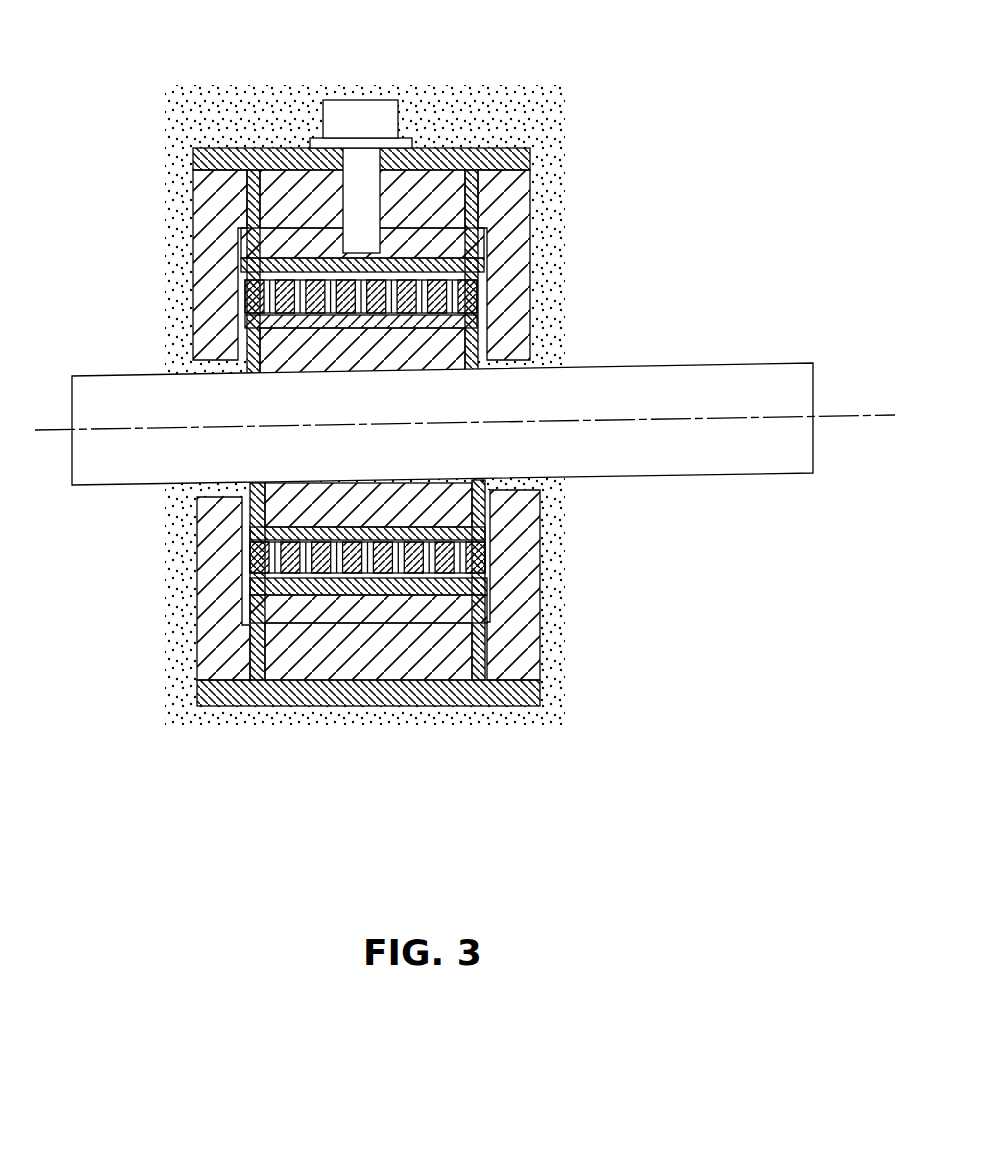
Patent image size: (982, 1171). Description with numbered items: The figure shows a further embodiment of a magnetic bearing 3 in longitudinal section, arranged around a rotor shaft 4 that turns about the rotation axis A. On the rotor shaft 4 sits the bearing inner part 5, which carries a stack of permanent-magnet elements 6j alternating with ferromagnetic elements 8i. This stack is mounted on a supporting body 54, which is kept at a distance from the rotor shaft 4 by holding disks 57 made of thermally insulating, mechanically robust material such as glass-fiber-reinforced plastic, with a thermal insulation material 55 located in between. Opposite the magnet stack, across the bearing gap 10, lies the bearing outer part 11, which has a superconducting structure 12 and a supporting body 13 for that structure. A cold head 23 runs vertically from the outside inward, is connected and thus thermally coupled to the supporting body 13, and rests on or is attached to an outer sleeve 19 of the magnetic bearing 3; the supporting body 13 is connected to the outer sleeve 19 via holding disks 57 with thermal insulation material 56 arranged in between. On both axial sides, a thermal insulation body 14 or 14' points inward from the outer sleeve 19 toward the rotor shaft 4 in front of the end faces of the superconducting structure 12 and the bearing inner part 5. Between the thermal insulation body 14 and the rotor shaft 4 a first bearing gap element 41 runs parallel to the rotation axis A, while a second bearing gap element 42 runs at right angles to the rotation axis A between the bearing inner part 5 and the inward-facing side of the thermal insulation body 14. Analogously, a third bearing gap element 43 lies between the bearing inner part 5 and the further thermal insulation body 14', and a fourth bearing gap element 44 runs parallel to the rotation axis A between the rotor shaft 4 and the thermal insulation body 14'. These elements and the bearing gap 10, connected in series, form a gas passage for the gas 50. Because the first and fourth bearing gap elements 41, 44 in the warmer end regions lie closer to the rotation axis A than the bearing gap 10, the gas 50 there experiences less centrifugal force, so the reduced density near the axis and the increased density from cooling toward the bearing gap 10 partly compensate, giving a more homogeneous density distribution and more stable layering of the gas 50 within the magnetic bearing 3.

The magnetic bearing 3 is at (385, 594).
The rotor shaft 4 is at (740, 402).
The bearing inner part 5 is at (388, 198).
The permanent-magnet elements 6j is at (367, 580).
The ferromagnetic elements 8i is at (296, 573).
The bearing gap 10 is at (473, 663).
The bearing outer part 11 is at (378, 194).
The superconducting structure 12 is at (257, 267).
The supporting body 13 is at (267, 247).
The thermal insulation body 14 is at (182, 258).
The further thermal insulation body 14' is at (421, 675).
The outer sleeve 19 is at (505, 147).
The cold head 23 is at (362, 117).
The first bearing gap element 41 is at (233, 488).
The second bearing gap element 42 is at (245, 557).
The third bearing gap element 43 is at (493, 558).
The fourth bearing gap element 44 is at (523, 482).
The gas 50 is at (187, 307).
The supporting body 54 is at (338, 322).
The thermal insulation material 55 is at (475, 320).
The thermal insulation material 56 is at (303, 195).
The holding disks 57 is at (473, 193).
The rotation axis A is at (860, 418).